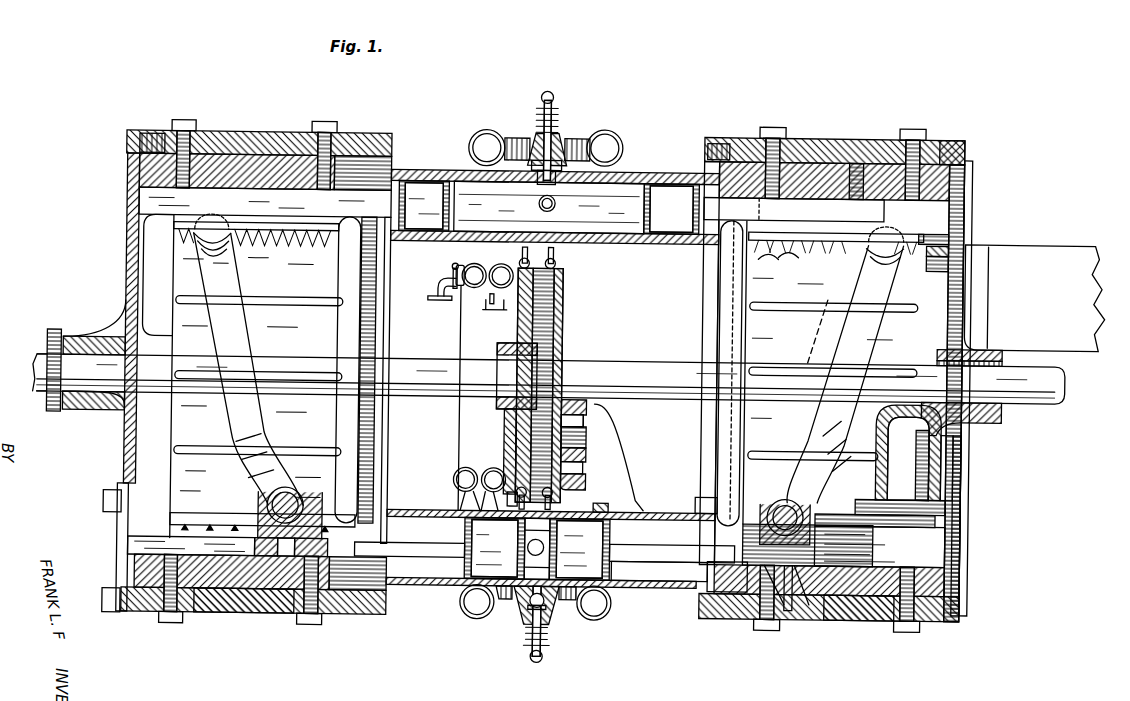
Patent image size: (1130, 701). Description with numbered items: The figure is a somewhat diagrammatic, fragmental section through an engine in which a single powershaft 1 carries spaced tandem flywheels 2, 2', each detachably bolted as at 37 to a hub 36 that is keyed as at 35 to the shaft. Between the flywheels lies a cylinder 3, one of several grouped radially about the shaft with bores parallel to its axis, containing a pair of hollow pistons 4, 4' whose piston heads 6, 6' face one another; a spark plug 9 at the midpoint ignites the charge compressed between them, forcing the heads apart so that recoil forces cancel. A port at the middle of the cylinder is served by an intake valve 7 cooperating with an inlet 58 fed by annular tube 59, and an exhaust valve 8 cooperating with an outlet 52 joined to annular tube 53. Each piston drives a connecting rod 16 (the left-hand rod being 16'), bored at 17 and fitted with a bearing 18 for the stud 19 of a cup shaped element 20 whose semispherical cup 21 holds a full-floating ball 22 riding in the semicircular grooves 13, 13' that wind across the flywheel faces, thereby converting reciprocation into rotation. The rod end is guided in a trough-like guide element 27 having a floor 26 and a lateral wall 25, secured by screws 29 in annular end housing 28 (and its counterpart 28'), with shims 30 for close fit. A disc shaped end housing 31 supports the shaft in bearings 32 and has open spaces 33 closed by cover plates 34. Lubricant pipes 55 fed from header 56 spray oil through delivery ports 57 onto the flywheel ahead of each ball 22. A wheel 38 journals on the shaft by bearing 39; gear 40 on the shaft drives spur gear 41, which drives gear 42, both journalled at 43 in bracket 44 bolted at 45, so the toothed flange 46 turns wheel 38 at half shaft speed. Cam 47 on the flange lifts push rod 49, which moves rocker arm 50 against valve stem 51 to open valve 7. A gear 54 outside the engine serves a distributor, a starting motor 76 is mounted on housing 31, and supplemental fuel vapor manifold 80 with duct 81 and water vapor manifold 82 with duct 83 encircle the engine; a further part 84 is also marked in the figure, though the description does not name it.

The powershaft 1 is at (652, 370).
The flywheel 2 is at (832, 380).
The flywheel 2' is at (226, 371).
The cylinder 3 is at (655, 172).
The piston 4 is at (624, 387).
The piston 4' is at (462, 377).
The piston head 6 is at (573, 543).
The piston head 6' is at (490, 544).
The intake valve 7 is at (525, 608).
The exhaust valve 8 is at (562, 145).
The spark plug 9 is at (553, 210).
The groove 13 is at (851, 365).
The groove 13' is at (236, 375).
The connecting rod 16 is at (746, 380).
The connecting rod 16' is at (409, 546).
The bore 17 is at (727, 577).
The bearing 18 is at (722, 566).
The stud 19 is at (296, 617).
The cup shaped element 20 is at (965, 165).
The cup 21 is at (722, 508).
The ball 22 is at (862, 262).
The lateral wall 25 is at (946, 528).
The floor 26 is at (938, 562).
The guide element 27 is at (952, 188).
The annular end housing 28 is at (860, 637).
The annular end housing 28' is at (243, 624).
The screw 29 is at (770, 618).
The shim 30 is at (865, 170).
The disc shaped end housing 31 is at (962, 472).
The bearing 32 is at (1000, 415).
The open space 33 is at (960, 247).
The cover plate 34 is at (958, 240).
The key 35 is at (903, 464).
The hub 36 is at (942, 440).
The bolt 37 is at (950, 458).
The wheel 38 is at (566, 292).
The bearing 39 is at (516, 412).
The gear 40 is at (556, 366).
The spur gear 41 is at (582, 395).
The gear 42 is at (592, 436).
The journal 43 is at (605, 402).
The bracket 44 is at (592, 416).
The bolt 45 is at (612, 511).
The flange 46 is at (562, 485).
The cam 47 is at (590, 476).
The push rod 49 is at (560, 262).
The rocker arm 50 is at (550, 656).
The valve stem 51 is at (550, 636).
The exhaust outlet 52 is at (533, 143).
The annular tube 53 is at (477, 601).
The gear 54 is at (58, 332).
The lubricant pipe 55 is at (925, 237).
The header 56 is at (722, 284).
The delivery port 57 is at (870, 622).
The inlet 58 is at (532, 612).
The annular tube 59 is at (594, 603).
The starting motor 76 is at (1075, 250).
The supplemental fuel vapor manifold 80 is at (458, 478).
The connecting duct 81 is at (478, 508).
The water vapor manifold 82 is at (490, 468).
The connecting duct 83 is at (519, 498).
The drain cock 84 is at (462, 290).